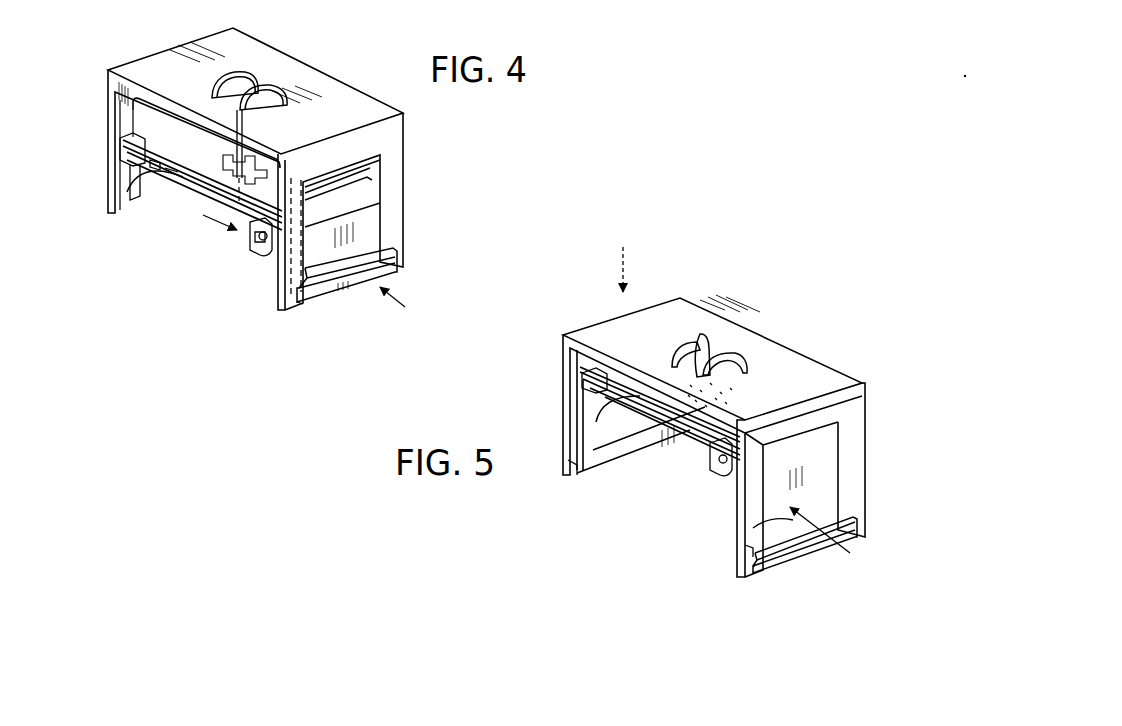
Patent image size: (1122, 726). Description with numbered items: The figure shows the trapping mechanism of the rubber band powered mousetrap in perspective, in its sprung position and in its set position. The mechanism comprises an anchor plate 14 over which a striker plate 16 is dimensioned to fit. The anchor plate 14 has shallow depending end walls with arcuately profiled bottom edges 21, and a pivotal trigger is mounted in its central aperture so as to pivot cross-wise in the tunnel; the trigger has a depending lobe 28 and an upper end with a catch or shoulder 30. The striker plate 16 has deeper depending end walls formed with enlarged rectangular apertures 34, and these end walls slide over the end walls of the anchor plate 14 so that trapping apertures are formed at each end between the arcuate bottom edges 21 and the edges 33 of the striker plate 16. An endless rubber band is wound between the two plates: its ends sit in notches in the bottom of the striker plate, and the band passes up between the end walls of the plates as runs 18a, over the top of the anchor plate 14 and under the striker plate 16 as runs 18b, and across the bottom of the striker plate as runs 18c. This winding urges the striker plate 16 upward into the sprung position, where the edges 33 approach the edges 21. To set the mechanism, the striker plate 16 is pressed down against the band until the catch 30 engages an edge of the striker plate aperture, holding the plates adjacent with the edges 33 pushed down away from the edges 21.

In FIG. 4, the anchor plate 14 is at (178, 172).
In FIG. 5, the anchor plate 14 is at (588, 397).
In FIG. 4, the striker plate 16 is at (345, 107).
In FIG. 5, the striker plate 16 is at (598, 330).
In FIG. 4, the runs of the band 18a is at (383, 222).
In FIG. 4, the runs of the band 18b is at (205, 180).
In FIG. 5, the runs of the band 18b is at (660, 413).
In FIG. 4, the runs of the band 18c is at (268, 262).
In FIG. 5, the runs of the band 18c is at (617, 452).
In FIG. 4, the arcuately profiled bottom edges 21 is at (310, 268).
In FIG. 5, the arcuately profiled bottom edges 21 is at (595, 420).
In FIG. 4, the depending lobe 28 is at (250, 248).
In FIG. 5, the depending lobe 28 is at (710, 465).
In FIG. 4, the catch or shoulder 30 is at (297, 83).
In FIG. 5, the catch or shoulder 30 is at (708, 343).
In FIG. 4, the edges of the striker plate 33 is at (302, 303).
In FIG. 5, the edges of the striker plate 33 is at (568, 465).
In FIG. 4, the enlarged rectangular apertures 34 is at (147, 122).